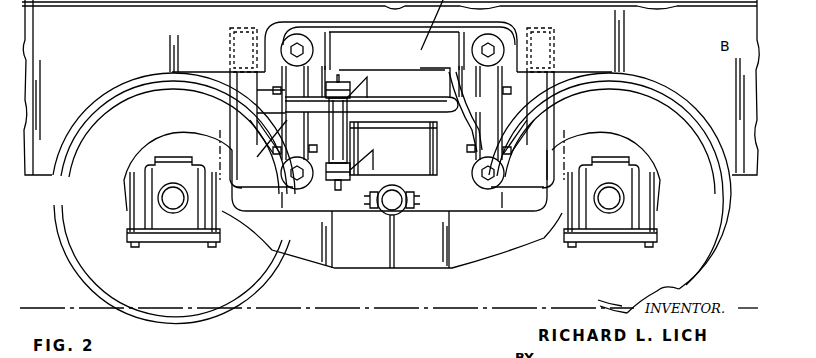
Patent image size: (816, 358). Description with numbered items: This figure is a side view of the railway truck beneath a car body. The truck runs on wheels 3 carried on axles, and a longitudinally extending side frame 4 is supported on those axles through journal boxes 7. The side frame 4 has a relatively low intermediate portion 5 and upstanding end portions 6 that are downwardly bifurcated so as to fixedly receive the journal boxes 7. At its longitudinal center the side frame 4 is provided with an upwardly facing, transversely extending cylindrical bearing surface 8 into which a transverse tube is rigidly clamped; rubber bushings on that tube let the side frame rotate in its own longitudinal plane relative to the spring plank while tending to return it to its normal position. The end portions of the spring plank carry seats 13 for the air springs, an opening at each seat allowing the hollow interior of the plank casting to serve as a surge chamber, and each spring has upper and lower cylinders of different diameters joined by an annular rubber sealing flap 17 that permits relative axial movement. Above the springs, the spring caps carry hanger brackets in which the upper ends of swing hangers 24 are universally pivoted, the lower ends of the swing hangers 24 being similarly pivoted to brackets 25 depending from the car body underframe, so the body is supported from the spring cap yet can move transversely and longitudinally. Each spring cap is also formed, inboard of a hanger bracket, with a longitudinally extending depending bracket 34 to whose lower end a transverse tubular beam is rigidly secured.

The wheels 3 is at (72, 260).
The side frames 4 is at (474, 261).
The intermediate portion 5 is at (392, 230).
The end portions 6 is at (173, 143).
The journal boxes 7 is at (182, 230).
The cylindrical bearing surfaces 8 is at (403, 214).
The seats 13 is at (412, 124).
The annular rubber sealing flap 17 is at (385, 105).
The swing hangers 24 is at (297, 110).
The brackets 25 is at (240, 85).
The bracket 34 is at (467, 129).